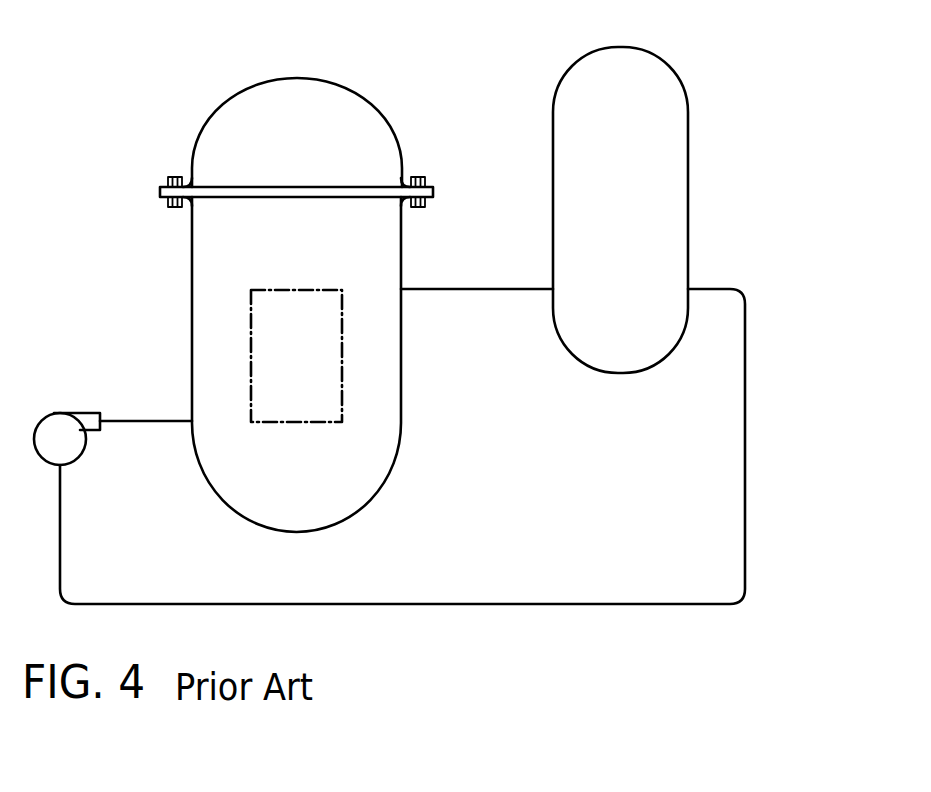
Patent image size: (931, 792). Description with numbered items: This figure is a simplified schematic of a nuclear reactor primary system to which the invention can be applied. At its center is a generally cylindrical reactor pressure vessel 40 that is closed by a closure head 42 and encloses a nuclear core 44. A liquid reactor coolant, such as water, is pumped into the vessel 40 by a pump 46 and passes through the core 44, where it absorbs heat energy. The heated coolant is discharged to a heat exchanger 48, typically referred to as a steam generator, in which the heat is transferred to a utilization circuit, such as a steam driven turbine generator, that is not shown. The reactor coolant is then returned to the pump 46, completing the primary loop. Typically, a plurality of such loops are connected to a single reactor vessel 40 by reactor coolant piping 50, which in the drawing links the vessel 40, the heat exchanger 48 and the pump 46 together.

The reactor pressure vessel 40 is at (403, 408).
The closure head 42 is at (201, 134).
The nuclear core 44 is at (250, 343).
The pump 46 is at (53, 414).
The heat exchanger 48 is at (688, 148).
The reactor coolant piping 50 is at (745, 535).